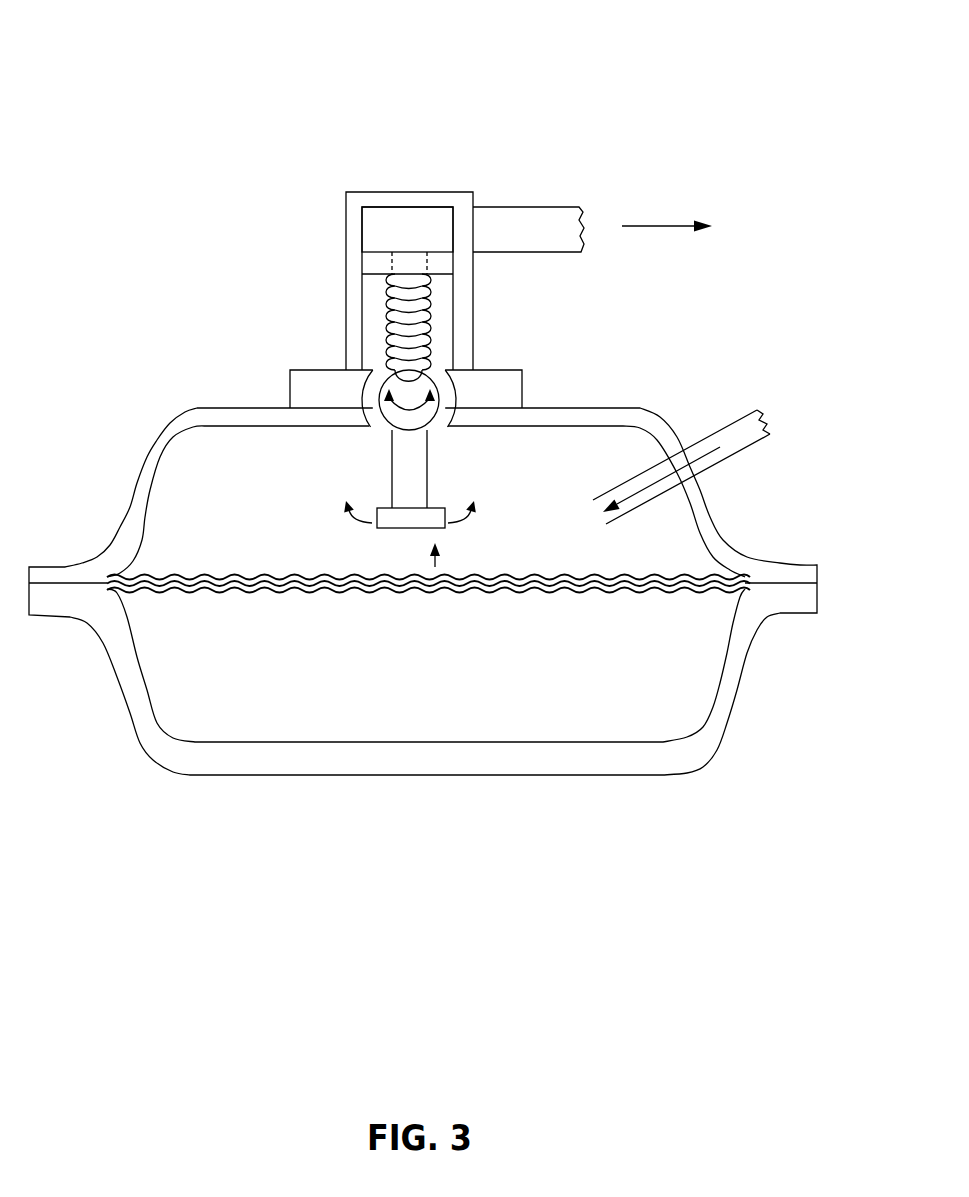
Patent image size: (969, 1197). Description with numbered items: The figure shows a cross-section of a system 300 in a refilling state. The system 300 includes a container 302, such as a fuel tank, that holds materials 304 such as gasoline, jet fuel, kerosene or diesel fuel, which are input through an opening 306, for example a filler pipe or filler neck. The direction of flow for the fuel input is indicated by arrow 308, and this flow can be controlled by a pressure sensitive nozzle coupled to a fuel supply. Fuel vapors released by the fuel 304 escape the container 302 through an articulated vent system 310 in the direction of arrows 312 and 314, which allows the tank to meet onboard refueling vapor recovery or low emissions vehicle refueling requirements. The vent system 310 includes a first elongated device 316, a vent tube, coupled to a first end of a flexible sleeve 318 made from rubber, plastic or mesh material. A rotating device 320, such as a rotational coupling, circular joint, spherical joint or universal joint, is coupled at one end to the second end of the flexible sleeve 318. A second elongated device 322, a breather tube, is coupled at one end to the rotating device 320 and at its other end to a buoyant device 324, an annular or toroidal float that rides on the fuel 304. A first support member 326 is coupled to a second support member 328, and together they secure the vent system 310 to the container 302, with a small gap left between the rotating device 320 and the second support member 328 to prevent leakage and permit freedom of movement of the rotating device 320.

The system 300 is at (152, 65).
The container 302 is at (753, 637).
The materials 304 is at (697, 685).
The opening 306 is at (753, 448).
The arrow 308 is at (707, 437).
The vent system 310 is at (203, 358).
The arrow 312 is at (433, 567).
The arrow 314 is at (637, 226).
The first elongated device 316 is at (550, 207).
The flexible sleeve 318 is at (397, 323).
The rotating device 320 is at (441, 400).
The second elongated device 322 is at (392, 437).
The buoyant device 324 is at (434, 507).
The first support member 326 is at (348, 192).
The second support member 328 is at (292, 370).